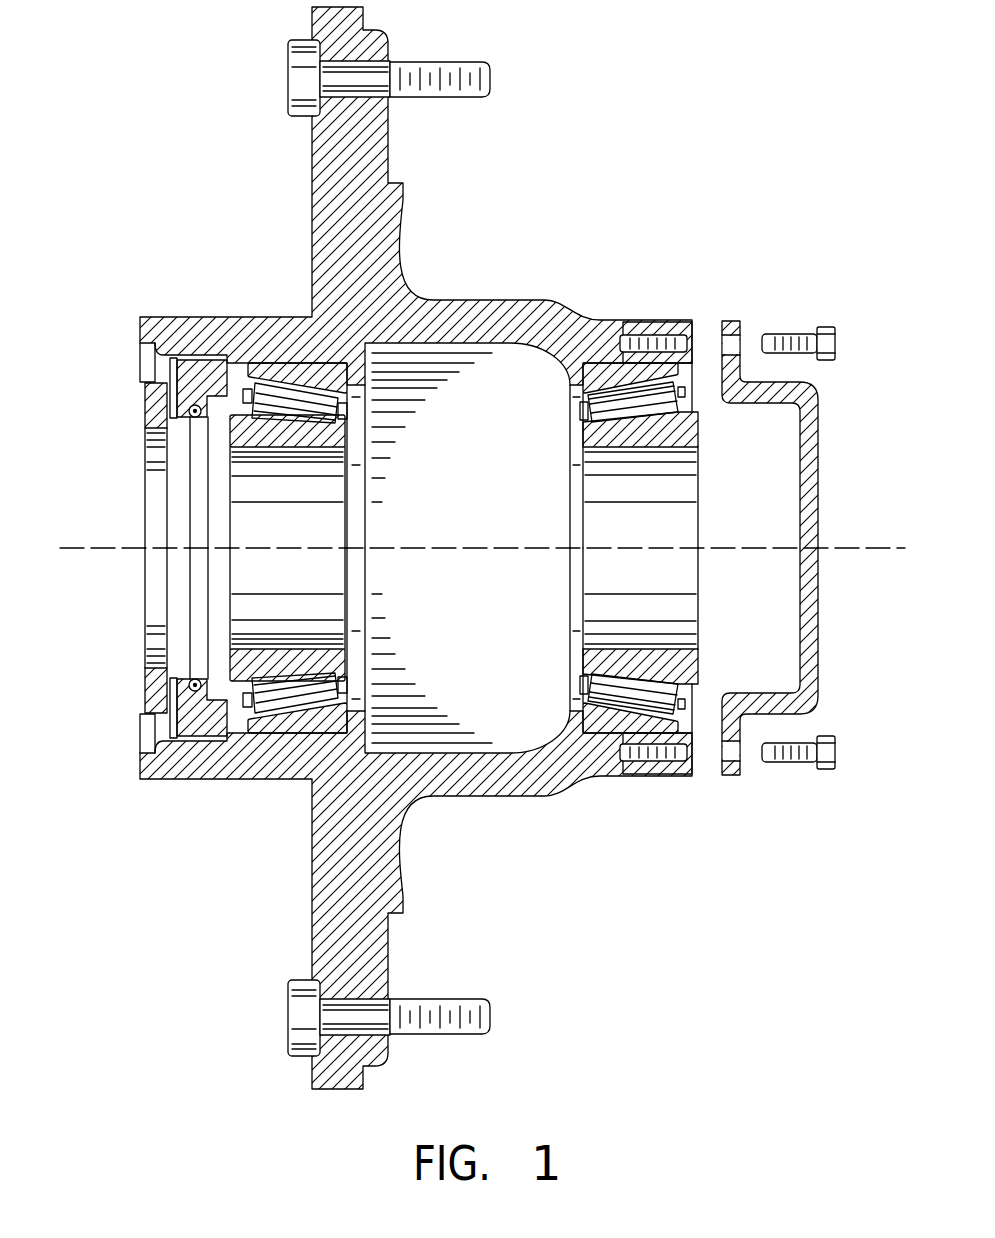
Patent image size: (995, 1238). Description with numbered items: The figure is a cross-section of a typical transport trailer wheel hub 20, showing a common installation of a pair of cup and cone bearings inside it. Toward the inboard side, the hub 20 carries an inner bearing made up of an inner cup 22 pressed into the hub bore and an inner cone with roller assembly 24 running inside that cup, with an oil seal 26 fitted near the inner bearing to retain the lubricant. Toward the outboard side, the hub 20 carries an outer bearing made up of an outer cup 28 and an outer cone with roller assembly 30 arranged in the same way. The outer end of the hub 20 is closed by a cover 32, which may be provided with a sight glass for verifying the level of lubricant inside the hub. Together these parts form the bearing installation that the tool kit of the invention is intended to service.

The wheel hub 20 is at (530, 300).
The inner cup 22 is at (347, 707).
The inner cone with roller assembly 24 is at (347, 658).
The oil seal 26 is at (140, 396).
The outer cup 28 is at (570, 385).
The outer cone with roller assembly 30 is at (572, 437).
The cover 32 is at (800, 502).